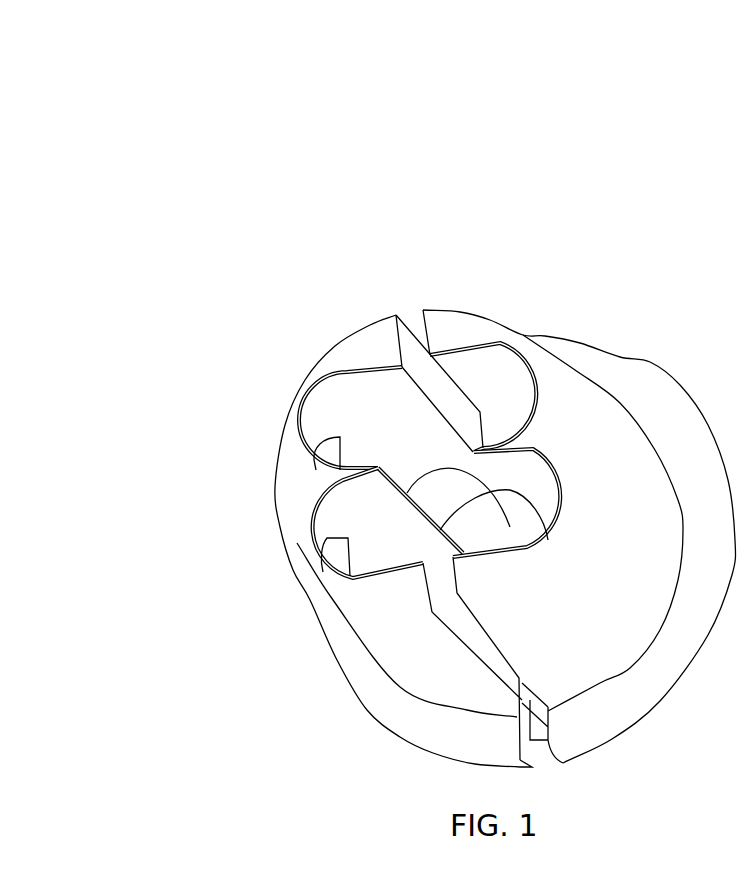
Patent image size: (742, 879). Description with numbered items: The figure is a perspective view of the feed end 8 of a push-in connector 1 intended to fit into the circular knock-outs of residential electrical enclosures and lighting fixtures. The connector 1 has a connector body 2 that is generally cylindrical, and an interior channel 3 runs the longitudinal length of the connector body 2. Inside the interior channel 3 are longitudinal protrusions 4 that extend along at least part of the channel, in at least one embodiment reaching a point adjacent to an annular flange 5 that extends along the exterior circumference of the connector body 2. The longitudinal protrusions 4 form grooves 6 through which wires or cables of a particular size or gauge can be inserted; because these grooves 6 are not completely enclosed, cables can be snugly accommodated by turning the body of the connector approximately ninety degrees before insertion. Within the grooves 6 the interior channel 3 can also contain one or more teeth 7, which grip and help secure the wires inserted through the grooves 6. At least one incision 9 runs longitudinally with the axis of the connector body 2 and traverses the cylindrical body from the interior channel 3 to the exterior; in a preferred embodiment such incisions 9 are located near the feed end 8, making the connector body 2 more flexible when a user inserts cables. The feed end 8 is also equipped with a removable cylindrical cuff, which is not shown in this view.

The push-in connector 1 is at (312, 258).
The connector body 2 is at (576, 421).
The interior channel 3 is at (442, 427).
The longitudinal protrusions 4 is at (363, 470).
The annular flange 5 is at (653, 392).
The grooves 6 is at (355, 532).
The teeth 7 is at (340, 555).
The feed end 8 is at (517, 313).
The incision 9 is at (541, 754).